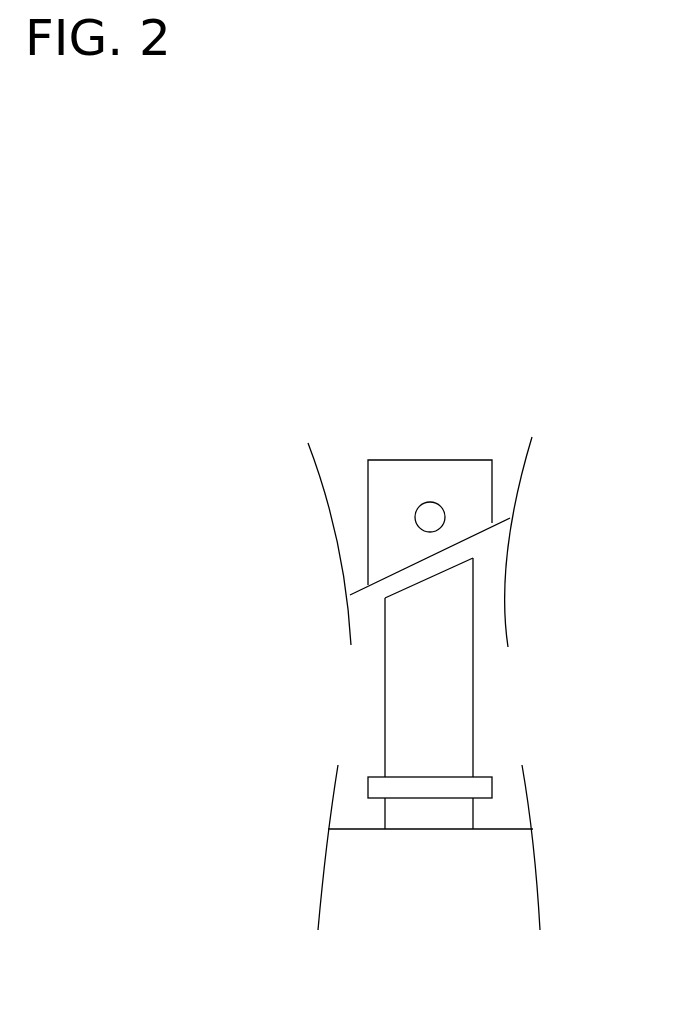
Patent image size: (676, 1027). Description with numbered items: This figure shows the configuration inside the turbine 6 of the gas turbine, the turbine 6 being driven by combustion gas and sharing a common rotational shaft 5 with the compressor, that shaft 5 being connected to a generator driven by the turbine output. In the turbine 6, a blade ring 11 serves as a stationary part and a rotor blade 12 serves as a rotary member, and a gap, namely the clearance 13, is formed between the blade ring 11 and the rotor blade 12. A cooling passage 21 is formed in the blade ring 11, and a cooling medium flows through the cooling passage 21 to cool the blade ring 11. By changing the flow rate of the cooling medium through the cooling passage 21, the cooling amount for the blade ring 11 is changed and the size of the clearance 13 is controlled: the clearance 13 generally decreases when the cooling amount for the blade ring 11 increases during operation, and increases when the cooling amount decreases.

The rotational shaft 5 is at (500, 855).
The turbine 6 is at (542, 388).
The blade ring 11 is at (471, 460).
The rotor blade 12 is at (445, 680).
The clearance 13 is at (470, 547).
The cooling passage 21 is at (432, 516).